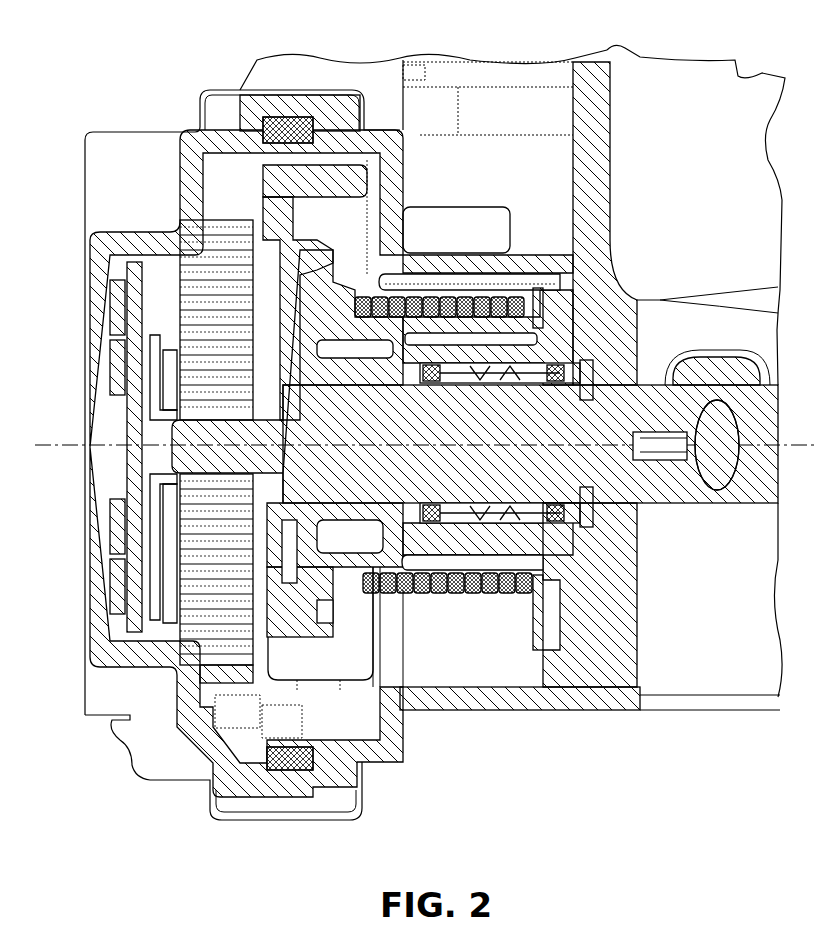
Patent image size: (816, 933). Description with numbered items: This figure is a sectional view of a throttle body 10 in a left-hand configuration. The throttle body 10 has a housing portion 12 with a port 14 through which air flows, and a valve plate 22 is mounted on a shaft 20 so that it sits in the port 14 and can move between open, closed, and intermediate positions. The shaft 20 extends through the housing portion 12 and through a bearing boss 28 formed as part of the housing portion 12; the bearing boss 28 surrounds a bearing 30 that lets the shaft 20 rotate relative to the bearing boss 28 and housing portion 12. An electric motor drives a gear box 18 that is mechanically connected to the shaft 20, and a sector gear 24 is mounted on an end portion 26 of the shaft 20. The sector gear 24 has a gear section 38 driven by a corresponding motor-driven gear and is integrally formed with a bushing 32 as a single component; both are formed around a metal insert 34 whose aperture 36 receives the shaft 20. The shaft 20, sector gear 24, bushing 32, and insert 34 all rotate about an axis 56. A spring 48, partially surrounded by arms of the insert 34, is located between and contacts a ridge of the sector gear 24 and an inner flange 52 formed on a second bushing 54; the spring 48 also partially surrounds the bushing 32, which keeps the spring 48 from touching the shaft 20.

The throttle body 10 is at (97, 779).
The housing portion 12 is at (610, 700).
The port 14 is at (640, 678).
The gear box 18 is at (70, 266).
The shaft 20 is at (647, 490).
The valve plate 22 is at (768, 530).
The sector gear 24 is at (305, 250).
The end portion 26 is at (316, 481).
The bearing boss 28 is at (565, 340).
The bearing 30 is at (505, 520).
The bushing 32 is at (340, 290).
The insert 34 is at (275, 290).
The aperture 36 is at (285, 468).
The gear section 38 is at (345, 180).
The spring 48 is at (453, 303).
The inner flange 52 is at (540, 287).
The second bushing 54 is at (488, 310).
The axis 56 is at (85, 445).